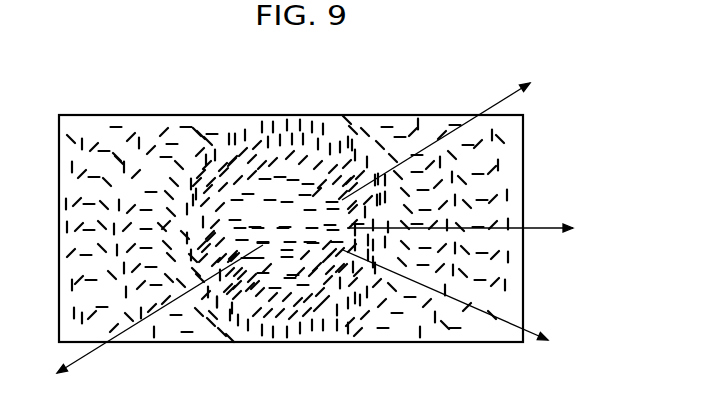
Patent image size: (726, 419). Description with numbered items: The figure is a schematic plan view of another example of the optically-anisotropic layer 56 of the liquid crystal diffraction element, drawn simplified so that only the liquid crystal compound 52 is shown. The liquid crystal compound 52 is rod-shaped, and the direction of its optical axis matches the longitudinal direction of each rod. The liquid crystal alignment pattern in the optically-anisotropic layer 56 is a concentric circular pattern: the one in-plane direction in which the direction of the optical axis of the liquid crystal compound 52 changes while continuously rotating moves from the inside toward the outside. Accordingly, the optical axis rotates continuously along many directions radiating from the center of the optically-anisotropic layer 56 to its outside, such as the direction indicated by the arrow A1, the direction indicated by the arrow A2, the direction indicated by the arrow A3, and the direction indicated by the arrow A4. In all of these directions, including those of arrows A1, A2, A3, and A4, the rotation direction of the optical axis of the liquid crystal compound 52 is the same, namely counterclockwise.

The liquid crystal compound 52 is at (165, 134).
The optically-anisotropic layer 56 is at (556, 126).
The arrow A1 is at (510, 90).
The arrow A2 is at (552, 226).
The arrow A3 is at (532, 334).
The arrow A4 is at (88, 355).